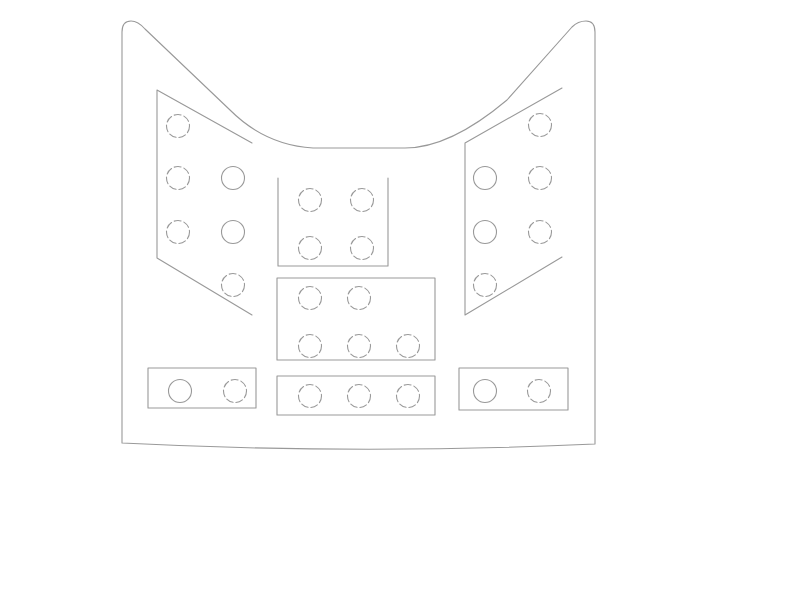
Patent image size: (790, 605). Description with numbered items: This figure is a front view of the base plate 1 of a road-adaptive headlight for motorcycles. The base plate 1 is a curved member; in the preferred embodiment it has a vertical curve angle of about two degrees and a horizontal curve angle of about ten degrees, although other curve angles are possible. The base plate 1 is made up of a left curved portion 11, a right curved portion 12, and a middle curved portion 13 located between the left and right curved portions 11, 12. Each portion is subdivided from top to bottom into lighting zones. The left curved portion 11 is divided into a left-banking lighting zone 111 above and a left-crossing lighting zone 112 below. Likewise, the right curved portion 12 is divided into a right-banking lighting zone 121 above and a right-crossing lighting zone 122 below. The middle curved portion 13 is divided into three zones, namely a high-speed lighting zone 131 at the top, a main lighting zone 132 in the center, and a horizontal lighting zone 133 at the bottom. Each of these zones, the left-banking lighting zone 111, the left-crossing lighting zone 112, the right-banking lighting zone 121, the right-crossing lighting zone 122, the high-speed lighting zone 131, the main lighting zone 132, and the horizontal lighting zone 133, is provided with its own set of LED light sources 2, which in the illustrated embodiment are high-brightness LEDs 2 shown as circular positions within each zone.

The base plate 1 is at (618, 84).
The left curved portion 11 is at (534, 44).
The right curved portion 12 is at (220, 72).
The middle curved portion 13 is at (356, 122).
The left-banking lighting zone 111 is at (560, 157).
The left-crossing lighting zone 112 is at (568, 388).
The right-banking lighting zone 121 is at (157, 140).
The right-crossing lighting zone 122 is at (167, 408).
The high-speed lighting zone 131 is at (377, 180).
The main lighting zone 132 is at (335, 362).
The horizontal lighting zone 133 is at (437, 406).
The LED light sources 2 is at (178, 178).